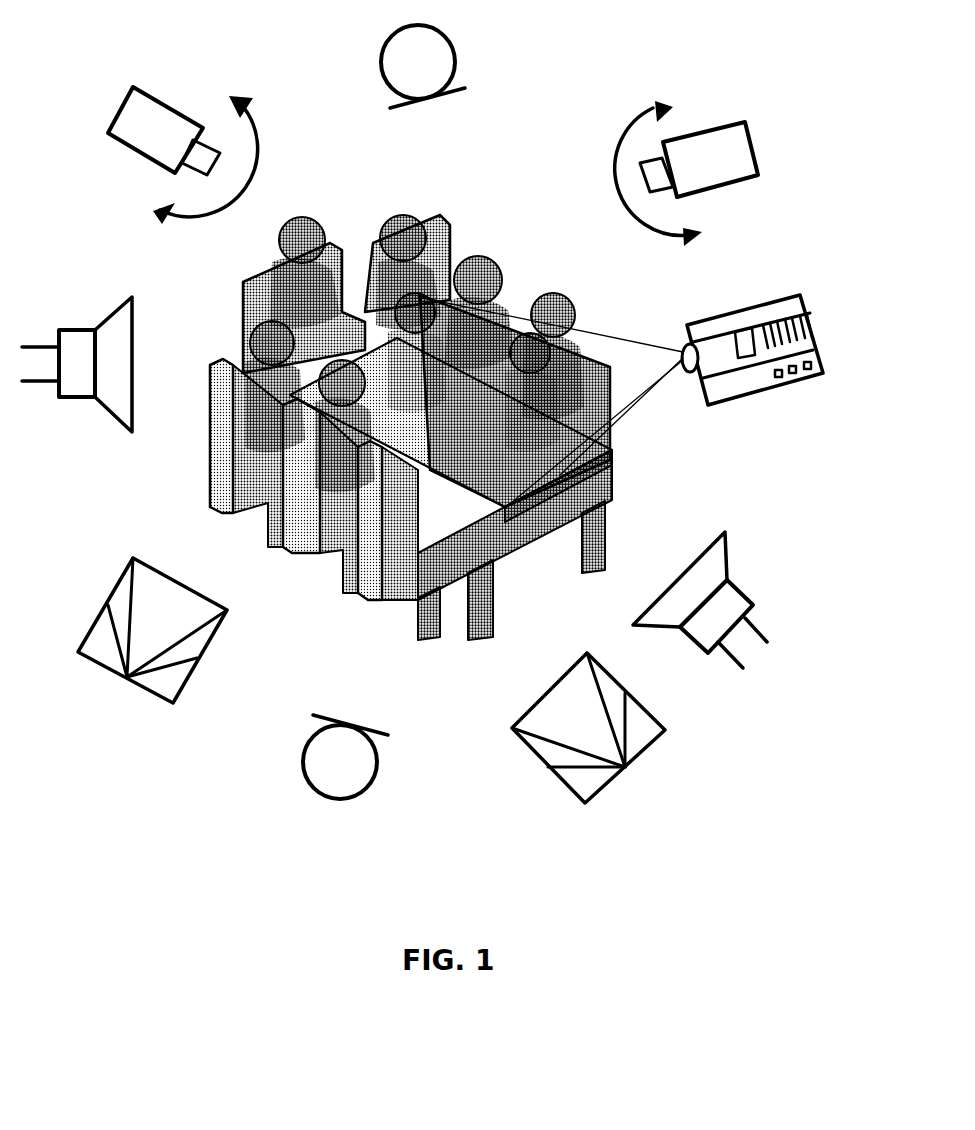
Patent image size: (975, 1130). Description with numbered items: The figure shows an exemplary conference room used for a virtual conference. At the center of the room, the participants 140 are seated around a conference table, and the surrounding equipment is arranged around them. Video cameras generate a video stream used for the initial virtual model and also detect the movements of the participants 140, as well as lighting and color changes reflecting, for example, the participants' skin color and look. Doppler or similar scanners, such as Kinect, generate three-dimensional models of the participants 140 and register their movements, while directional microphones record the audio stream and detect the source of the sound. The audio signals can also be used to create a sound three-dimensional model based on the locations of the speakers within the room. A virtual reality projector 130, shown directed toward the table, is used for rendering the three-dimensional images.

The virtual reality projector 130 is at (620, 385).
The participants 140 is at (411, 427).